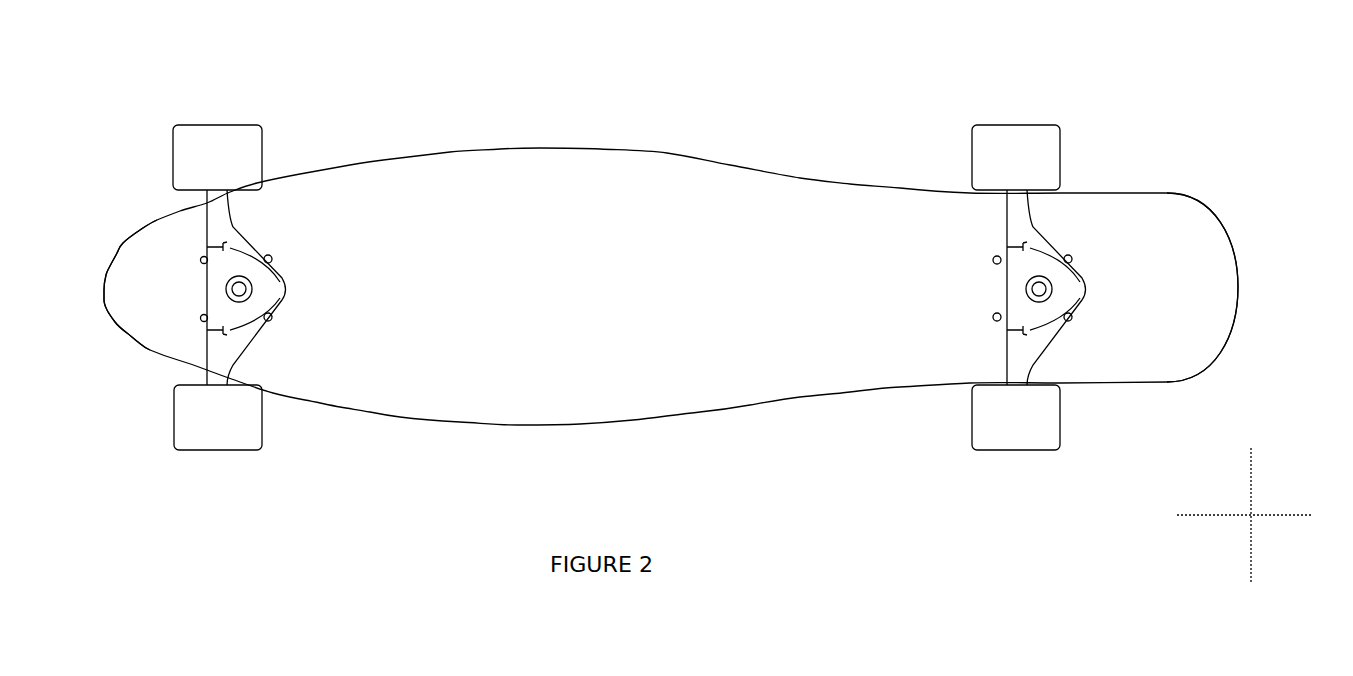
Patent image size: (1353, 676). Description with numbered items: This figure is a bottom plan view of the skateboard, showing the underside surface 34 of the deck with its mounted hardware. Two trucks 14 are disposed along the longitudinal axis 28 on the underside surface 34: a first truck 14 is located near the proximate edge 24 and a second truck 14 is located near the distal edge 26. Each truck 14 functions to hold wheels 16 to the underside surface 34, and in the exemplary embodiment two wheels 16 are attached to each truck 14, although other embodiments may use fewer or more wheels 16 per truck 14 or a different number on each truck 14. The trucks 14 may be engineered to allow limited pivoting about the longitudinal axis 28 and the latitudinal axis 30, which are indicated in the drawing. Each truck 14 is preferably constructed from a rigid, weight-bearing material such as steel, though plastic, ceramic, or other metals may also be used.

The truck 14 is at (240, 347).
The wheel 16 is at (263, 138).
The proximate edge 24 is at (103, 292).
The distal edge 26 is at (1232, 250).
The longitudinal axis 28 is at (1263, 516).
The latitudinal axis 30 is at (1257, 498).
The underside surface 34 is at (677, 368).